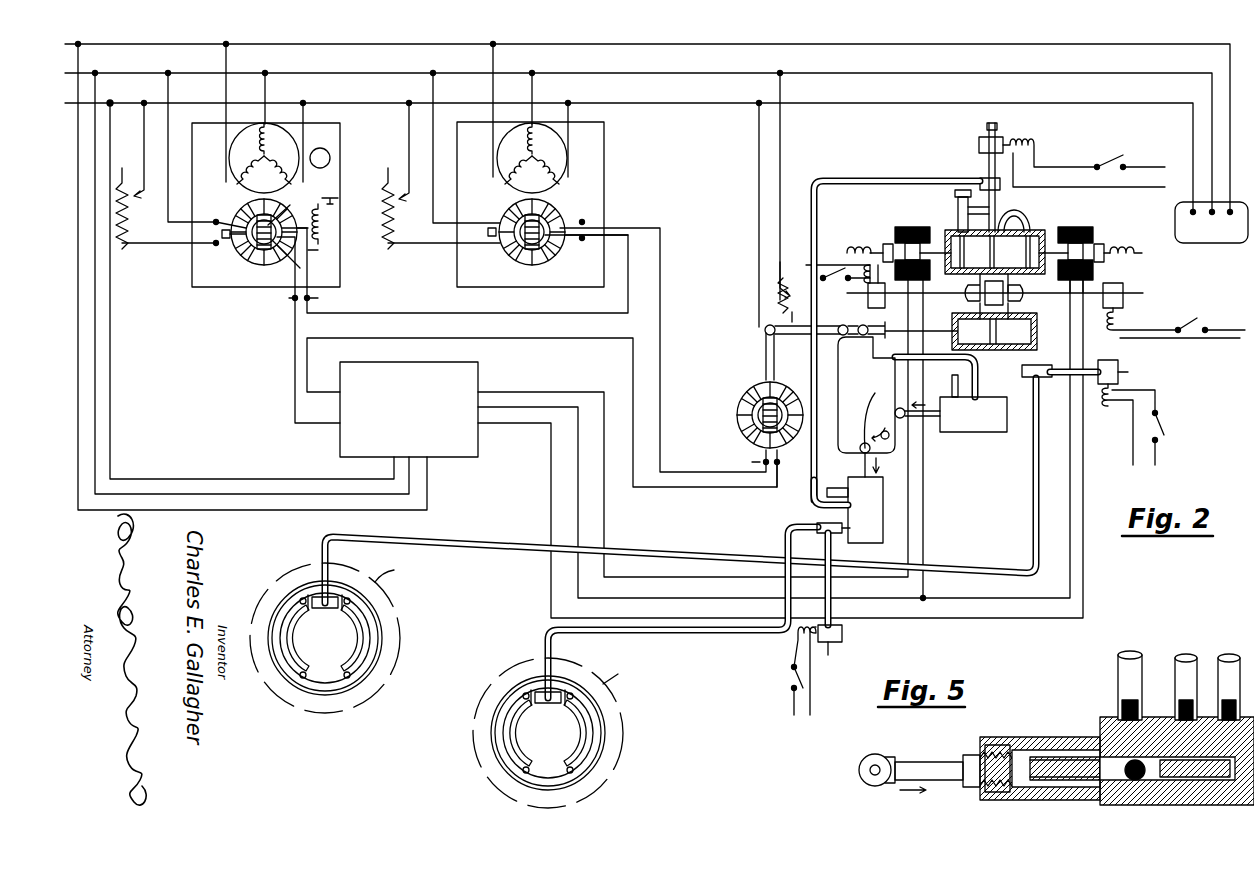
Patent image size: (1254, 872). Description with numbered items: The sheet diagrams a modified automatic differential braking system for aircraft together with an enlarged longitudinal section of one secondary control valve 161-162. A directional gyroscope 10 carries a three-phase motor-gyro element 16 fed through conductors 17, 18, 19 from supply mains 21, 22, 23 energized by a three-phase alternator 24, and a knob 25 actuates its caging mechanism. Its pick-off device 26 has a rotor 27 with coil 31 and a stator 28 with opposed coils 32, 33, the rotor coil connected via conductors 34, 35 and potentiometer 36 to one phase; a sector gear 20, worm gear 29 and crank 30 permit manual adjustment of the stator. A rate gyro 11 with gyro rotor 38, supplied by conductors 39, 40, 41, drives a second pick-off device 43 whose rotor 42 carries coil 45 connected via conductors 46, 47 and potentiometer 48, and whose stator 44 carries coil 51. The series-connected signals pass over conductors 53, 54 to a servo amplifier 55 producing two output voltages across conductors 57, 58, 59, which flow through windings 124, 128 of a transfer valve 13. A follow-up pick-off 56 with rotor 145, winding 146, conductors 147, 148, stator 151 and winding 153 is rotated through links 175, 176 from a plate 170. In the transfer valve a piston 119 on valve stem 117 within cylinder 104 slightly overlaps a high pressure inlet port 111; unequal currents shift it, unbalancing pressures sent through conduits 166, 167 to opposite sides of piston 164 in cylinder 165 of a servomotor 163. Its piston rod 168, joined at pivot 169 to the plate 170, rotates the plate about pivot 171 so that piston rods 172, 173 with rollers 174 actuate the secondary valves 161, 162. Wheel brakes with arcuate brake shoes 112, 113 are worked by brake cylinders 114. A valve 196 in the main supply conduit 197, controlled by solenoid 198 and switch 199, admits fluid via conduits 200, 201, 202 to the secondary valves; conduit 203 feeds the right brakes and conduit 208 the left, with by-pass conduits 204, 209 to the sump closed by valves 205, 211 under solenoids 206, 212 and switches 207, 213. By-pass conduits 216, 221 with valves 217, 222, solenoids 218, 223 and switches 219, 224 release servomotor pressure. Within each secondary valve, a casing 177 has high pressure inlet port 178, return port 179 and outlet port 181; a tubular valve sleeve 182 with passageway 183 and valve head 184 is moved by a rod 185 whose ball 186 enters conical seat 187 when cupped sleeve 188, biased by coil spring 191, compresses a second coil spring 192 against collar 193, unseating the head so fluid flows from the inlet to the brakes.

In FIG. 2, the directional gyroscope 10 is at (350, 281).
In FIG. 2, the rate gyro 11 is at (616, 281).
In FIG. 2, the motor-gyro element 16 is at (244, 143).
In FIG. 2, the conductor 17 is at (305, 118).
In FIG. 2, the conductor 18 is at (266, 91).
In FIG. 2, the conductor 19 is at (227, 63).
In FIG. 2, the sector gear 20 is at (322, 252).
In FIG. 2, the supply main conductor 21 is at (776, 46).
In FIG. 2, the supply main conductor 22 is at (772, 73).
In FIG. 2, the supply main conductor 23 is at (756, 103).
In FIG. 2, the three-phase alternator 24 is at (1203, 244).
In FIG. 2, the caging knob 25 is at (331, 166).
In FIG. 2, the pick-off device 26 is at (222, 193).
In FIG. 2, the rotor 27 is at (240, 243).
In FIG. 2, the stator 28 is at (208, 222).
In FIG. 2, the worm gear 29 is at (326, 226).
In FIG. 2, the crank 30 is at (338, 198).
In FIG. 2, the rotor coil 31 is at (250, 212).
In FIG. 2, the stator coil 32 is at (292, 201).
In FIG. 2, the stator coil 33 is at (301, 258).
In FIG. 2, the conductor 34 is at (156, 218).
In FIG. 2, the conductor 35 is at (158, 246).
In FIG. 2, the potentiometer 36 is at (128, 204).
In FIG. 2, the gyro rotor 38 is at (510, 147).
In FIG. 2, the conductor 39 is at (494, 62).
In FIG. 2, the conductor 40 is at (533, 90).
In FIG. 2, the conductor 41 is at (570, 116).
In FIG. 2, the rotor element 42 is at (479, 233).
In FIG. 2, the second pick-off device 43 is at (495, 203).
In FIG. 2, the stator element 44 is at (560, 212).
In FIG. 2, the rotor coil 45 is at (505, 245).
In FIG. 2, the conductor 46 is at (436, 174).
In FIG. 2, the conductor 47 is at (444, 173).
In FIG. 2, the potentiometer 48 is at (394, 208).
In FIG. 2, the stator coil 51 is at (500, 214).
In FIG. 2, the conductor 53 is at (295, 353).
In FIG. 2, the conductor 54 is at (344, 338).
In FIG. 2, the servo amplifier unit 55 is at (480, 368).
In FIG. 2, the pick-off unit 56 is at (756, 394).
In FIG. 2, the output conductor 57 is at (520, 392).
In FIG. 2, the common output conductor 58 is at (525, 408).
In FIG. 2, the output conductor 59 is at (551, 462).
In FIG. 2, the cylinder 104 is at (1048, 228).
In FIG. 2, the high pressure inlet port 111 is at (996, 222).
In FIG. 2, the arcuate brake shoe 112 is at (352, 642).
In FIG. 2, the arcuate brake shoe 113 is at (290, 658).
In FIG. 2, the hydraulic brake cylinder 114 is at (318, 604).
In FIG. 2, the valve stem 117 is at (965, 245).
In FIG. 2, the piston 119 is at (958, 212).
In FIG. 2, the winding 124 is at (902, 226).
In FIG. 2, the winding 128 is at (1092, 226).
In FIG. 2, the transfer valve 13 is at (1048, 227).
In FIG. 2, the rotor element 145 is at (780, 440).
In FIG. 2, the rotor winding 146 is at (756, 426).
In FIG. 2, the conductor 147 is at (757, 222).
In FIG. 2, the conductor 148 is at (782, 146).
In FIG. 2, the stator element 151 is at (744, 408).
In FIG. 2, the stator winding 153 is at (758, 440).
In FIG. 2, the secondary valve 161 is at (990, 430).
In FIG. 2, the secondary valve 162 is at (880, 530).
In FIG. 2, the servomotor 163 is at (1040, 340).
In FIG. 2, the piston 164 is at (998, 333).
In FIG. 2, the cylinder 165 is at (1012, 350).
In FIG. 2, the conduit 166 is at (968, 290).
In FIG. 2, the conduit 167 is at (1031, 288).
In FIG. 2, the piston rod 168 is at (944, 331).
In FIG. 2, the pivot 169 is at (833, 324).
In FIG. 2, the plate 170 is at (866, 350).
In FIG. 2, the pivot 171 is at (888, 466).
In FIG. 2, the piston rod 172 is at (918, 420).
In FIG. 5, the piston rod 172 is at (902, 760).
In FIG. 2, the piston rod 173 is at (863, 463).
In FIG. 5, the piston rod 173 is at (912, 735).
In FIG. 2, the roller 174 is at (892, 396).
In FIG. 5, the roller 174 is at (870, 752).
In FIG. 2, the pivoted link member 175 is at (790, 325).
In FIG. 2, the pivoted link member 176 is at (766, 350).
In FIG. 2, the valve 196 is at (980, 140).
In FIG. 2, the main high pressure supply conduit 197 is at (997, 127).
In FIG. 2, the solenoid 198 is at (1036, 146).
In FIG. 2, the switch 199 is at (1128, 151).
In FIG. 2, the conduit 200 is at (840, 180).
In FIG. 2, the conduit 201 is at (945, 360).
In FIG. 2, the conduit 202 is at (812, 500).
In FIG. 2, the conduit 203 is at (474, 537).
In FIG. 2, the by-pass conduit 204 is at (1060, 378).
In FIG. 2, the valve 205 is at (1120, 364).
In FIG. 2, the solenoid 206 is at (1108, 408).
In FIG. 2, the switch 207 is at (1165, 432).
In FIG. 2, the conduit 208 is at (762, 634).
In FIG. 2, the conduit 209 is at (838, 588).
In FIG. 2, the valve 211 is at (845, 634).
In FIG. 2, the solenoid 212 is at (797, 640).
In FIG. 2, the switch 213 is at (790, 680).
In FIG. 2, the by-pass conduit 216 is at (871, 292).
In FIG. 2, the valve 217 is at (865, 327).
In FIG. 2, the solenoid 218 is at (870, 250).
In FIG. 2, the switch 219 is at (824, 289).
In FIG. 2, the by-pass conduit 221 is at (1064, 296).
In FIG. 2, the valve 222 is at (1122, 288).
In FIG. 2, the solenoid 223 is at (1171, 330).
In FIG. 2, the switch 224 is at (1188, 318).
In FIG. 5, the secondary control valve 161-162 is at (1059, 684).
In FIG. 5, the casing 177 is at (1020, 737).
In FIG. 5, the high pressure inlet port 178 is at (1170, 722).
In FIG. 5, the low pressure return port 179 is at (1125, 740).
In FIG. 5, the outlet port 181 is at (1200, 690).
In FIG. 5, the tubular valve sleeve 182 is at (1135, 782).
In FIG. 5, the passageway 183 is at (1205, 786).
In FIG. 5, the valve head 184 is at (1238, 786).
In FIG. 5, the rod 185 is at (1078, 788).
In FIG. 5, the ball 186 is at (1120, 752).
In FIG. 5, the conical seat 187 is at (1130, 790).
In FIG. 5, the cupped sleeve 188 is at (985, 745).
In FIG. 5, the coil spring 191 is at (1062, 740).
In FIG. 5, the second coil spring 192 is at (972, 784).
In FIG. 5, the collar 193 is at (1095, 752).